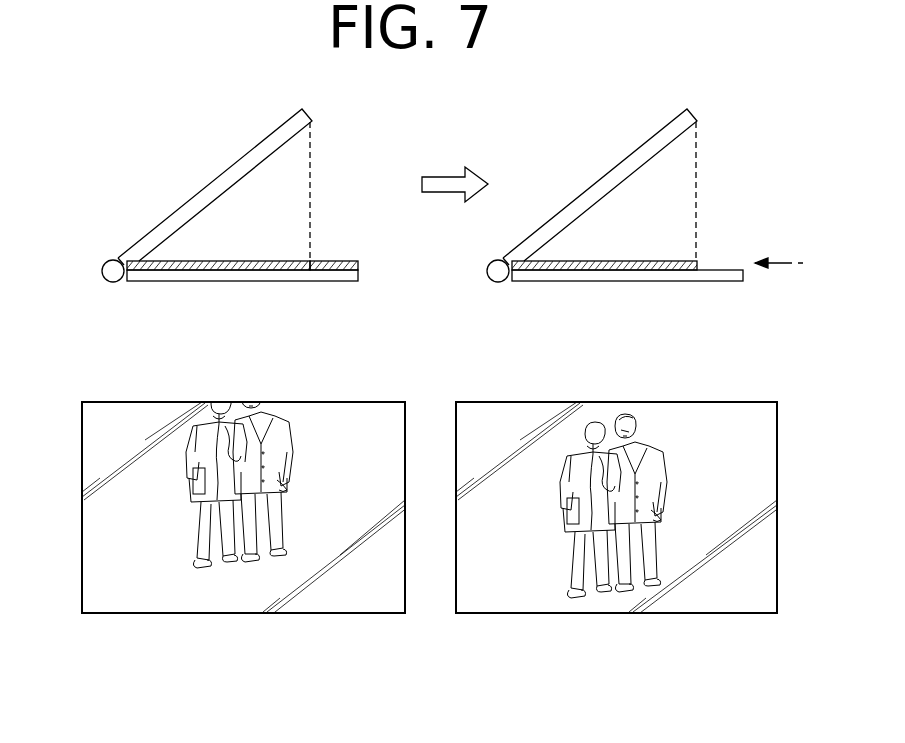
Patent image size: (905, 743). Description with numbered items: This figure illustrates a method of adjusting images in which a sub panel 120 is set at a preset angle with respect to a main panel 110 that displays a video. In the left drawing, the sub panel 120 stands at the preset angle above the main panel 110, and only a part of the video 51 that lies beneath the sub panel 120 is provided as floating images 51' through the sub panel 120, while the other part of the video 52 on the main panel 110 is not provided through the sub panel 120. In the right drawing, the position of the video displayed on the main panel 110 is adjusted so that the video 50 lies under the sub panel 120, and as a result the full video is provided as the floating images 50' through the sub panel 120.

The main panel 110 is at (277, 275).
The sub panel 120 is at (307, 114).
The video 50 is at (604, 289).
The part of a video 51 is at (218, 289).
The other part of the video 52 is at (348, 268).
The floating images 51' is at (239, 520).
The floating images 50' is at (613, 535).